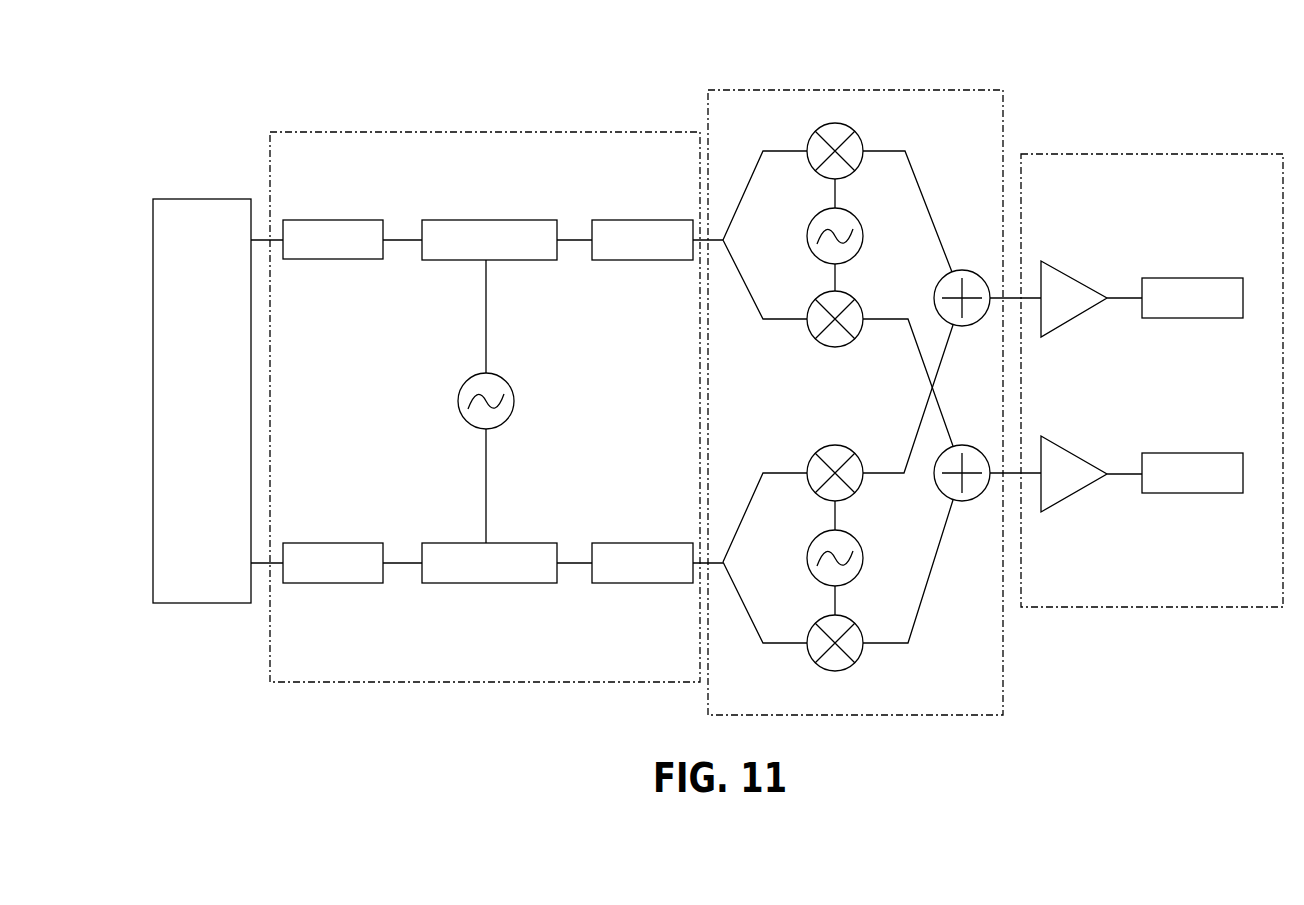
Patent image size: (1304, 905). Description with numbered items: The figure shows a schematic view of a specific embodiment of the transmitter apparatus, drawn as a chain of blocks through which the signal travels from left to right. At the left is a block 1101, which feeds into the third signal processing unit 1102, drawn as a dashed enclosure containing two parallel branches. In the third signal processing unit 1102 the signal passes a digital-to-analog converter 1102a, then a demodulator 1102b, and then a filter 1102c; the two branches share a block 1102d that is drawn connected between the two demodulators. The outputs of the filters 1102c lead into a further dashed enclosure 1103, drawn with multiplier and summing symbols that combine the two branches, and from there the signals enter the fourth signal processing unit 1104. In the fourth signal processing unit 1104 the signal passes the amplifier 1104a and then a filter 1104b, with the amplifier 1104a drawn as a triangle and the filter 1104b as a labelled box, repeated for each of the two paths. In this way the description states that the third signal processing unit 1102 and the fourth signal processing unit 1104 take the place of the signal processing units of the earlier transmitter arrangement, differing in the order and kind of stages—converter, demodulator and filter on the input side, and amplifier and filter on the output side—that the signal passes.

The digital signal processor (DSP) 1101 is at (200, 199).
The third signal processing unit 1102 is at (425, 132).
The digital-to-analog converter (DAC) 1102a is at (332, 259).
The demodulator 1102b is at (462, 260).
The filter 1102c is at (620, 260).
The oscillator 1102d is at (514, 401).
The mixing unit 1103 is at (943, 90).
The fourth signal processing unit 1104 is at (1180, 154).
The amplifier 1104a is at (1071, 320).
The filter 1104b is at (1192, 318).